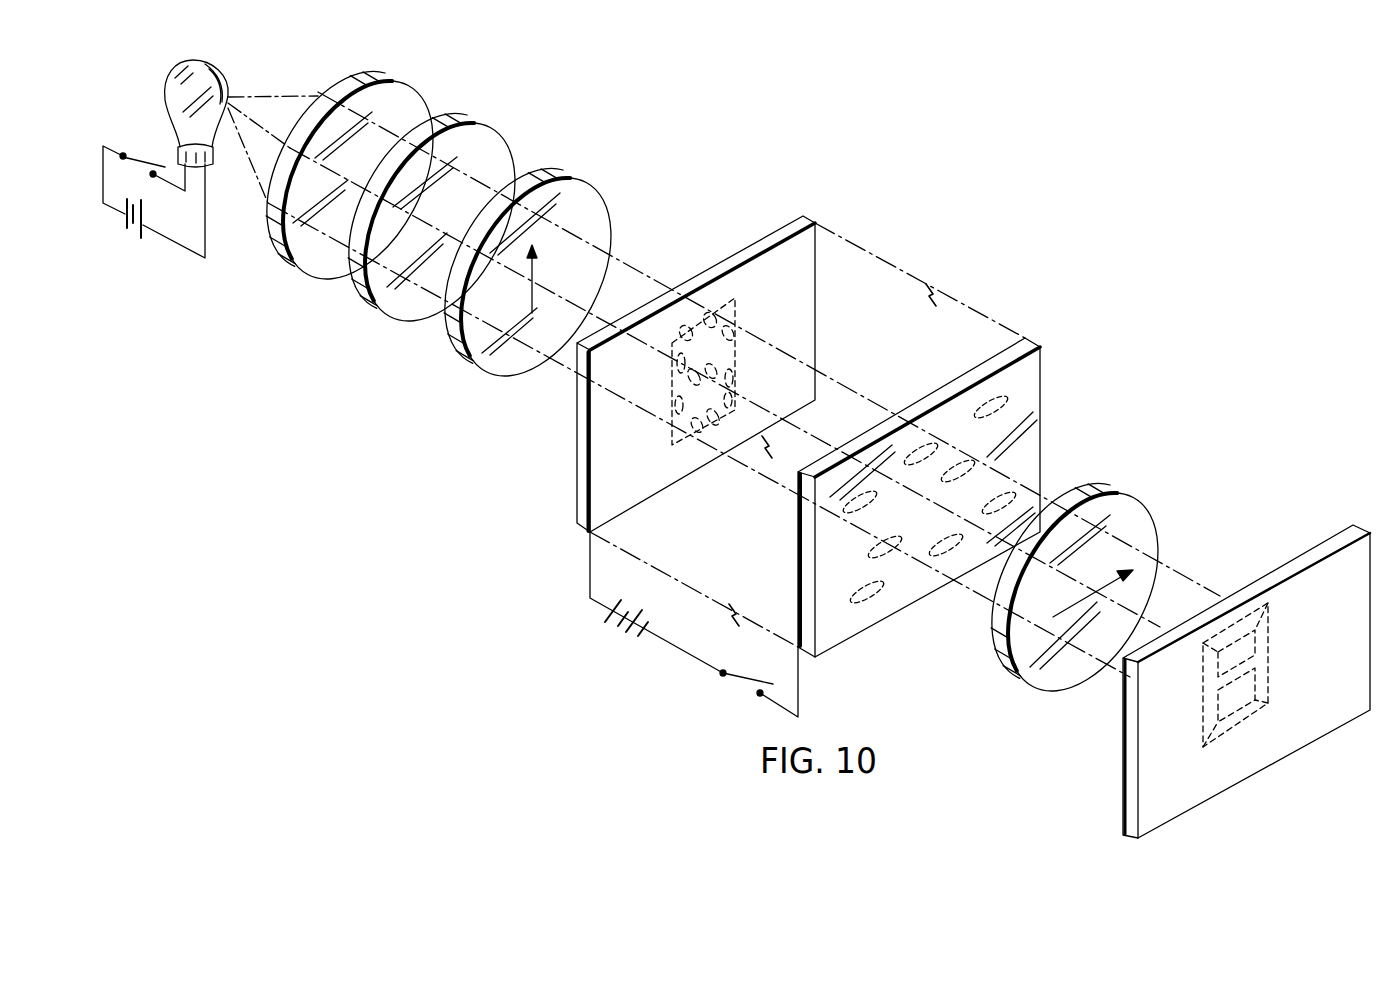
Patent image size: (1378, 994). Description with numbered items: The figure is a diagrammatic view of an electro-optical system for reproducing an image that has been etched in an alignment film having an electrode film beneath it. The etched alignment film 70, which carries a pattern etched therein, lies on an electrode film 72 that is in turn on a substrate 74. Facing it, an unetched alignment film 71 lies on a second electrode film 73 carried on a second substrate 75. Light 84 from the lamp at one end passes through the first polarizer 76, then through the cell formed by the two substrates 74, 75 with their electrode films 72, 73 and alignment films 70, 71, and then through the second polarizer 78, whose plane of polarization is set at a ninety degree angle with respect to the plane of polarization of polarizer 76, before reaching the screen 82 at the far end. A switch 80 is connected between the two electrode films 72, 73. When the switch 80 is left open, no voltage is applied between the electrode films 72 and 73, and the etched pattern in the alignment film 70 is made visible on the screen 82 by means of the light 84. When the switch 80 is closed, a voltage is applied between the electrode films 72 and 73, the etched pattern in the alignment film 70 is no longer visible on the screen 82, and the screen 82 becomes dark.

The alignment film 70 is at (665, 418).
The unetched alignment film 71 is at (878, 600).
The electrode film 72 is at (670, 374).
The electrode film 73 is at (798, 585).
The substrate 74 is at (580, 381).
The substrate 75 is at (949, 502).
The polarizer 76 is at (466, 356).
The polarizer 78 is at (1142, 513).
The switch 80 is at (740, 682).
The screen 82 is at (1130, 735).
The light 84 is at (272, 183).